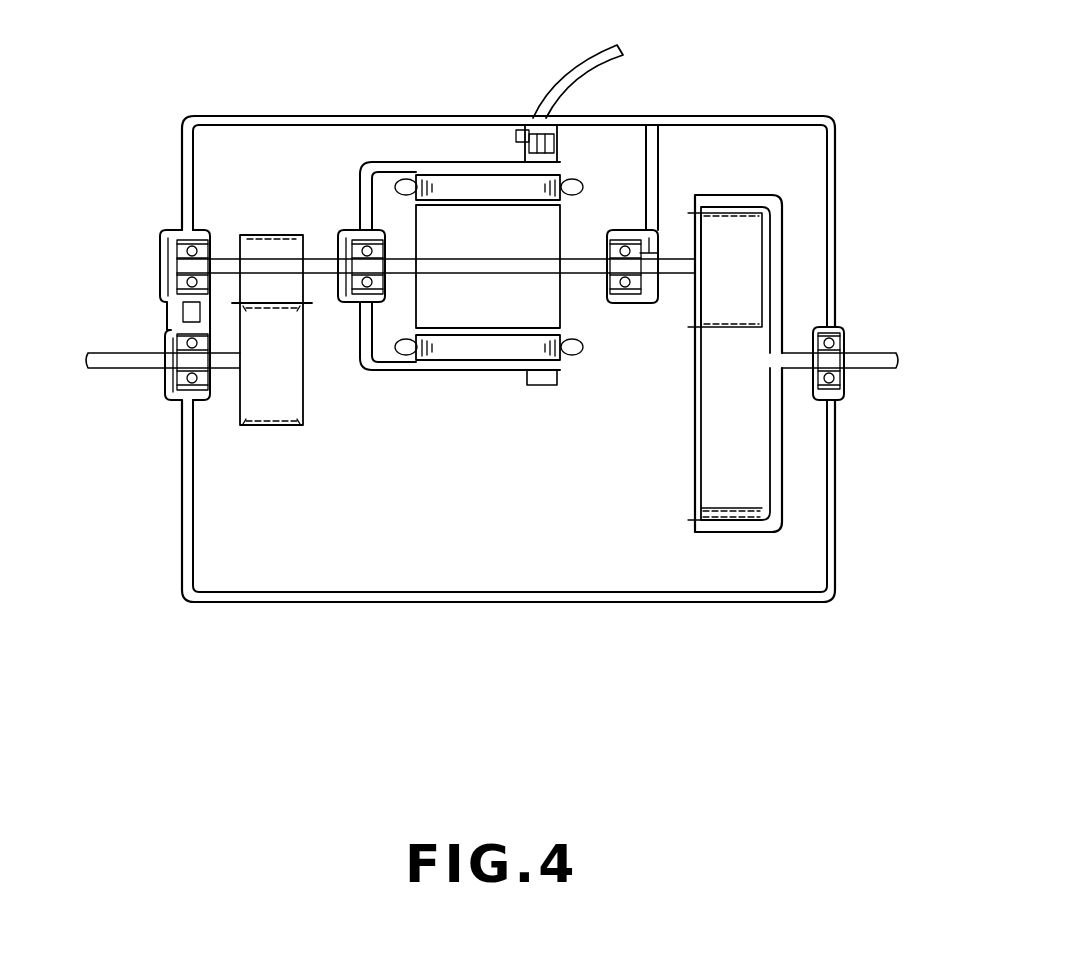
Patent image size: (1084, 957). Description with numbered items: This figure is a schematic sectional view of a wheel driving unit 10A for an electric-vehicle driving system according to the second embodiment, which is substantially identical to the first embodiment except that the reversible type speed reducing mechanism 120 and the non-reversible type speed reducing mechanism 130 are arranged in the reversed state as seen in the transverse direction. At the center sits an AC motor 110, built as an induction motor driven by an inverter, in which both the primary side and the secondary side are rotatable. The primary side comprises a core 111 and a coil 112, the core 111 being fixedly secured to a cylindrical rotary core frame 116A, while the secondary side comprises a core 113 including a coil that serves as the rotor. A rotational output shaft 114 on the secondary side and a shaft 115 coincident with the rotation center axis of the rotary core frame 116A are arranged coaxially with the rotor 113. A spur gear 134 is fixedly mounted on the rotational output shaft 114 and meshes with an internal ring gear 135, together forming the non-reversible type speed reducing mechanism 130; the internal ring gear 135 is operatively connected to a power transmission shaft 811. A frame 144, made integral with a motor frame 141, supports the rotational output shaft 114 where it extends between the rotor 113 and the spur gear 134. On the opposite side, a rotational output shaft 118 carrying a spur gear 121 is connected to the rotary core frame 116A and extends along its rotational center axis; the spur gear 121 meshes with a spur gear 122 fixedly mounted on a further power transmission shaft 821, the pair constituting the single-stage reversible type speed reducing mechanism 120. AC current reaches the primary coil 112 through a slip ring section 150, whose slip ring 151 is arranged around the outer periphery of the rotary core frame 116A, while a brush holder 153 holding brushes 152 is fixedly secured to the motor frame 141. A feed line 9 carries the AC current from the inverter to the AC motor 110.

The feed line 9 is at (582, 68).
The wheel driving unit 10A is at (581, 610).
The AC motor 110 is at (516, 320).
The core on the primary side 111 is at (510, 352).
The coil on the primary side 112 is at (577, 353).
The core on the secondary side 113 is at (512, 250).
The rotational output shaft 114 is at (594, 268).
The shaft 115 is at (397, 268).
The rotary core frame 116A is at (410, 366).
The rotational output shaft 118 is at (229, 268).
The reversible type speed reducing mechanism 120 is at (237, 415).
The spur gear 121 is at (290, 248).
The spur gear 122 is at (292, 400).
The non-reversible type speed reducing mechanism 130 is at (798, 500).
The spur gear 134 is at (745, 243).
The internal ring gear 135 is at (775, 470).
The motor frame 141 is at (770, 116).
The frame 144 is at (654, 165).
The slip ring section 150 is at (566, 145).
The slip ring 151 is at (540, 386).
The brushes 152 is at (527, 137).
The brush holder 153 is at (522, 138).
The power transmission shaft 811 is at (875, 368).
The input shaft 821 is at (130, 360).